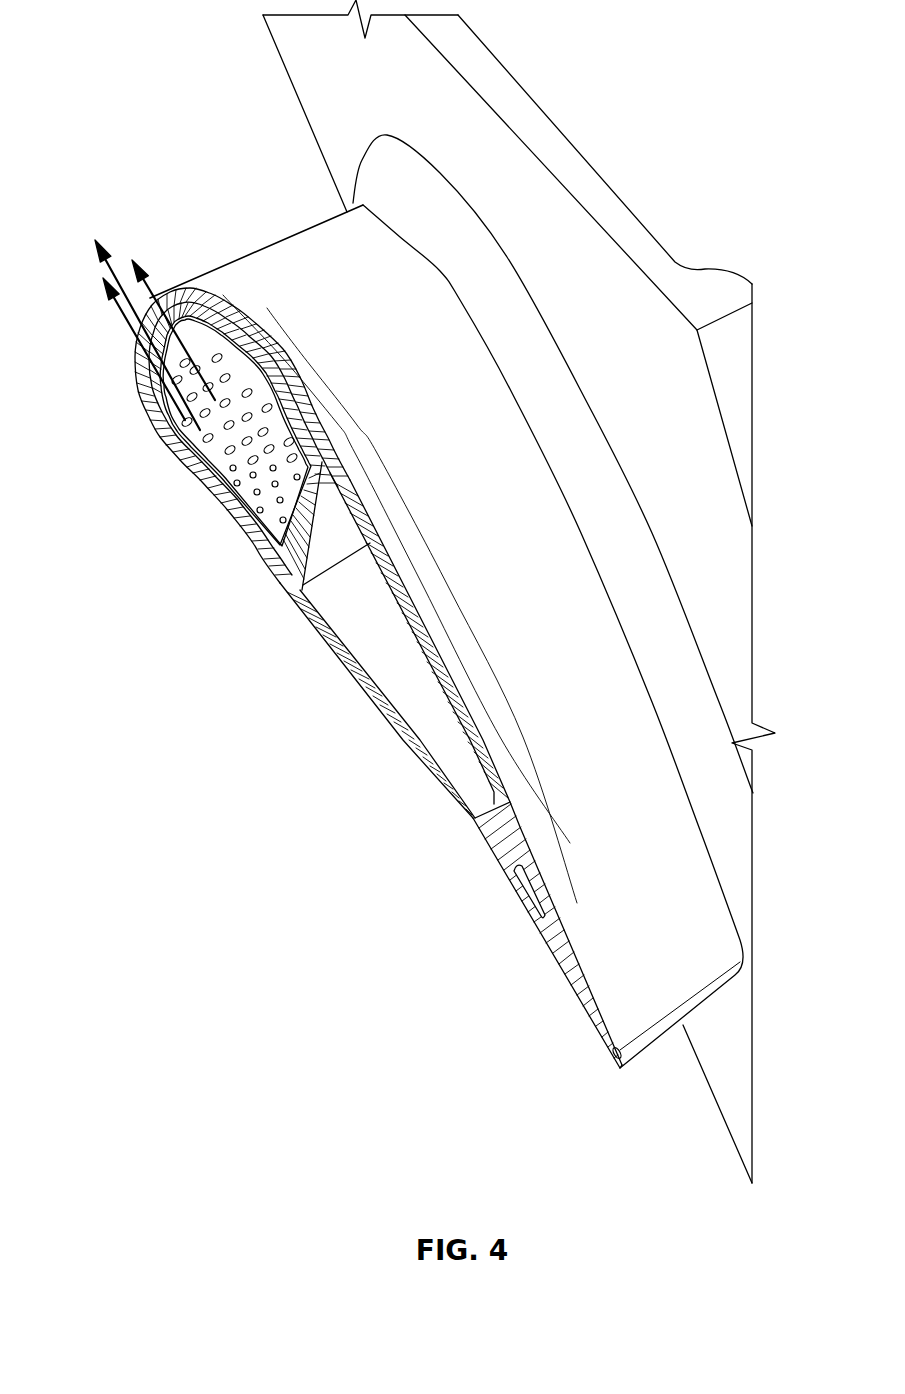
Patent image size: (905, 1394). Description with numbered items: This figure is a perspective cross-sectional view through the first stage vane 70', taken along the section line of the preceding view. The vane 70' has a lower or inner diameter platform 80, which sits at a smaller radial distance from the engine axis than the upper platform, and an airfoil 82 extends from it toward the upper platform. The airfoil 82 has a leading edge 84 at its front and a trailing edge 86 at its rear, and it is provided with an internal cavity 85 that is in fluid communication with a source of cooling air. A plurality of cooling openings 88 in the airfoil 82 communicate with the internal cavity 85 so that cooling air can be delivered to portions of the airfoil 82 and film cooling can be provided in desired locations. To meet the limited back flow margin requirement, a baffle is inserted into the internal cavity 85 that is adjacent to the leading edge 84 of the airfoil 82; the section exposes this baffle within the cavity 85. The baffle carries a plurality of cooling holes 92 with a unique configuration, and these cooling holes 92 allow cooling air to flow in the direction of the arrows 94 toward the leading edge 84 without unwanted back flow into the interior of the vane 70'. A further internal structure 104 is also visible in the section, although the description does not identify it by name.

The first stage vane 70' is at (560, 165).
The lower platform 80 is at (737, 512).
The airfoil 82 is at (717, 943).
The leading edge 84 is at (280, 240).
The internal cavity 85 is at (243, 537).
The trailing edge 86 is at (652, 1050).
The cooling openings 88 is at (187, 297).
The cooling holes 92 is at (185, 453).
The arrows 94 is at (107, 253).
The internal rib wall 104 is at (387, 710).